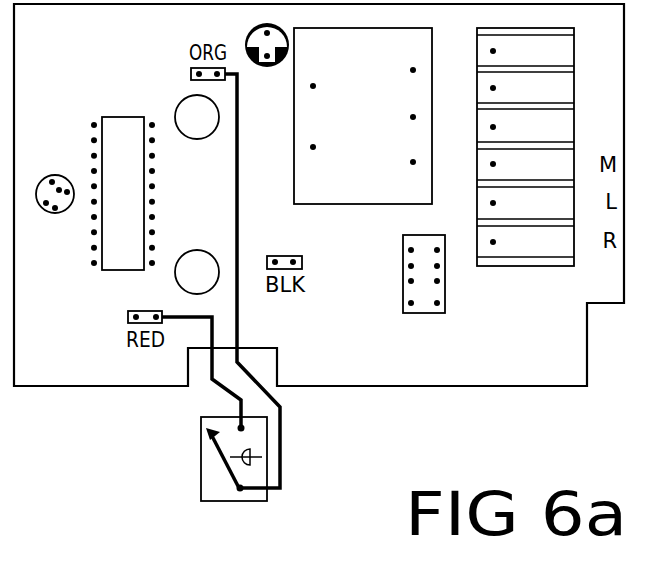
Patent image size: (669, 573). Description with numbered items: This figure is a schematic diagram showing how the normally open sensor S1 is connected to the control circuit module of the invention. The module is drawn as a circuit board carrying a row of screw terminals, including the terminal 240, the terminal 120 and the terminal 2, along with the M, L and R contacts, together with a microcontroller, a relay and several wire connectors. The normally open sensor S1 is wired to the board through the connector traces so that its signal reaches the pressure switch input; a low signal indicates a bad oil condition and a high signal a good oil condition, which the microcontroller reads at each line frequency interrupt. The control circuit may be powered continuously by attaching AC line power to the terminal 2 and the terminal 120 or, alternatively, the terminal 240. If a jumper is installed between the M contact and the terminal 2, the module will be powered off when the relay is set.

The 240 volt AC line terminal 240 is at (547, 50).
The 120 volt AC line terminal 120 is at (547, 87).
The terminal 2 is at (547, 125).
The normally open sensor S1 is at (199, 491).